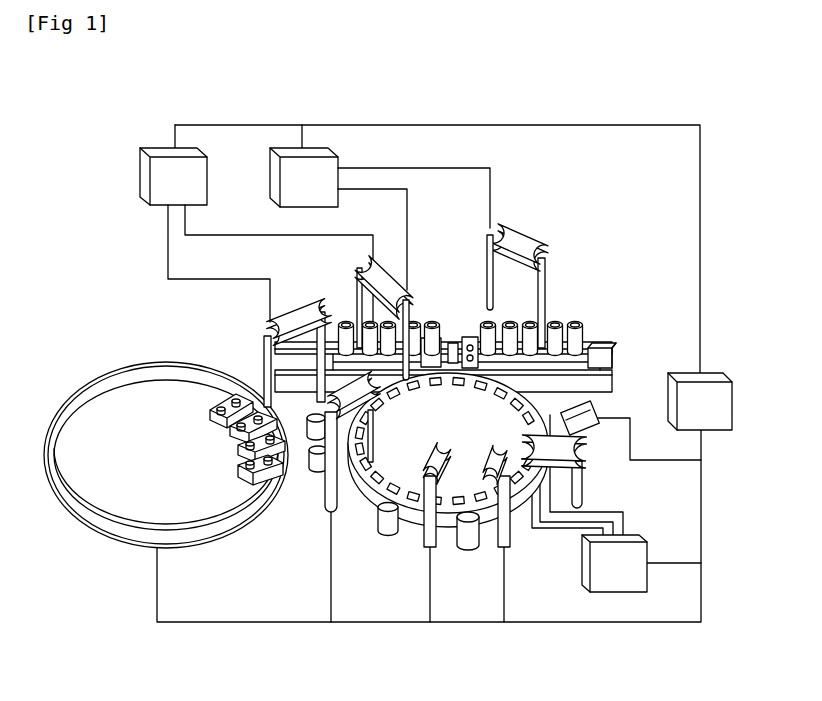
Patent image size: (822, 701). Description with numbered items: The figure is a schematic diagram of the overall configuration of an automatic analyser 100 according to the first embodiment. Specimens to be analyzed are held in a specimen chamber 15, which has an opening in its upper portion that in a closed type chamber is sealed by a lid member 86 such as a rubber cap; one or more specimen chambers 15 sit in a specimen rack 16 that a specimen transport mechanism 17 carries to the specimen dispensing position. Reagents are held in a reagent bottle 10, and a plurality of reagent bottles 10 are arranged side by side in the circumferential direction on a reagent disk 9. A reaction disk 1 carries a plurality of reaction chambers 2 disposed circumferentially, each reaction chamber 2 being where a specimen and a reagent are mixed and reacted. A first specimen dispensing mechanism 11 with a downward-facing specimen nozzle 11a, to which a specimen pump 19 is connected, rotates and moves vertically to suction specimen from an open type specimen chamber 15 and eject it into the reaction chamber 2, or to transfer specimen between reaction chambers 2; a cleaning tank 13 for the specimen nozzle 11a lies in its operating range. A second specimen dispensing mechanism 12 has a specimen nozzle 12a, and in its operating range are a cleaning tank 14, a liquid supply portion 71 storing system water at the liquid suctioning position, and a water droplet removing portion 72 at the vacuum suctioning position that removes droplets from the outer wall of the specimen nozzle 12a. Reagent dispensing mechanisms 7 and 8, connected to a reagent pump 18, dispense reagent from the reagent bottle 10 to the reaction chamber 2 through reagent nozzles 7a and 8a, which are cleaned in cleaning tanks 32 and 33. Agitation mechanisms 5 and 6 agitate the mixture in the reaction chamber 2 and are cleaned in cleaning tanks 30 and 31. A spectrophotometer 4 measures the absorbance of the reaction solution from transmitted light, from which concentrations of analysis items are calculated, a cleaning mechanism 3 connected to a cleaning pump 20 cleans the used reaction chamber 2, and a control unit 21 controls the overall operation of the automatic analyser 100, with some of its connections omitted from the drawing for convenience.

The reaction disk 1 is at (370, 492).
The reaction chamber 2 is at (412, 511).
The cleaning mechanism 3 is at (588, 456).
The spectrophotometer 4 is at (600, 409).
The agitation mechanism 5 is at (508, 548).
The agitation mechanism 6 is at (433, 548).
The reagent dispensing mechanism 7 is at (300, 305).
The reagent nozzle 7a is at (265, 357).
The reagent dispensing mechanism 8 is at (338, 514).
The reagent nozzle 8a is at (374, 432).
The reagent disk 9 is at (100, 372).
The reagent bottle 10 is at (240, 477).
The first specimen dispensing mechanism 11 is at (395, 283).
The specimen nozzle 11a is at (437, 389).
The second specimen dispensing mechanism 12 is at (520, 229).
The specimen nozzle 12a is at (487, 258).
The cleaning tank 13 is at (452, 340).
The cleaning tank 14 is at (468, 336).
The specimen chamber 15 is at (591, 346).
The specimen rack 16 is at (583, 341).
The specimen transport mechanism 17 is at (612, 383).
The reagent pump 18 is at (160, 175).
The specimen pump 19 is at (333, 164).
The cleaning pump 20 is at (616, 585).
The control unit 21 is at (722, 376).
The cleaning tank 30 is at (467, 546).
The cleaning tank 31 is at (385, 533).
The cleaning tank 32 is at (308, 437).
The cleaning tank 33 is at (318, 469).
The liquid supply portion 71 is at (510, 323).
The water droplet removing portion 72 is at (528, 323).
The lid member 86 is at (433, 320).
The automatic analyser 100 is at (571, 100).